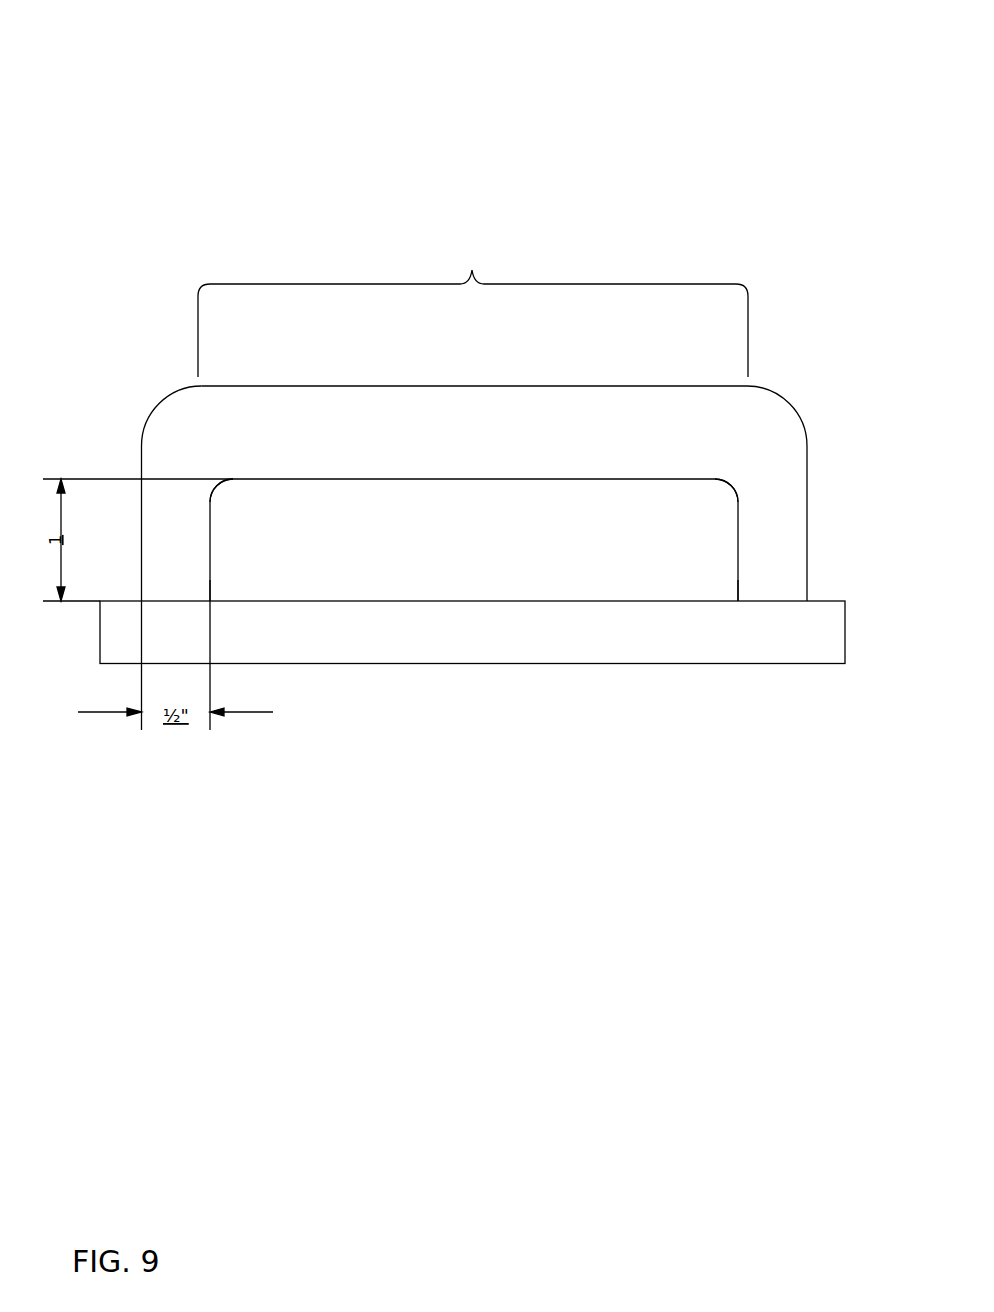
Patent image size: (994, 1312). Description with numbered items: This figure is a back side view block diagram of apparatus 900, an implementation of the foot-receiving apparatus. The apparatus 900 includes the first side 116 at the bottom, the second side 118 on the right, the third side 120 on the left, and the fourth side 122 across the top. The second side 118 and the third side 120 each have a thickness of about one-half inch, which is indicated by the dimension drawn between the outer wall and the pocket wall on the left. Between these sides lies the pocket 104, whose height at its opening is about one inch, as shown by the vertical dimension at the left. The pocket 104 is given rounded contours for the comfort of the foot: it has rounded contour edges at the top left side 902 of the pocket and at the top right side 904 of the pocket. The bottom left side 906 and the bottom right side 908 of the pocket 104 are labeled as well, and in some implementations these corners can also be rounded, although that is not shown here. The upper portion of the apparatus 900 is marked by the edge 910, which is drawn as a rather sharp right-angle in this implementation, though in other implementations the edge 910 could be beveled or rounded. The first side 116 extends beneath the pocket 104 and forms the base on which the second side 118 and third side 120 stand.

The apparatus 900 is at (874, 25).
The edge 910 is at (473, 306).
The fourth side 122 is at (454, 386).
The third side 120 is at (142, 458).
The second side 118 is at (807, 458).
The pocket 104 is at (474, 604).
The top left side of the pocket 902 is at (237, 500).
The top right side of the pocket 904 is at (713, 501).
The bottom left side of the pocket 906 is at (237, 582).
The bottom right side of the pocket 908 is at (713, 582).
The first side 116 is at (527, 664).